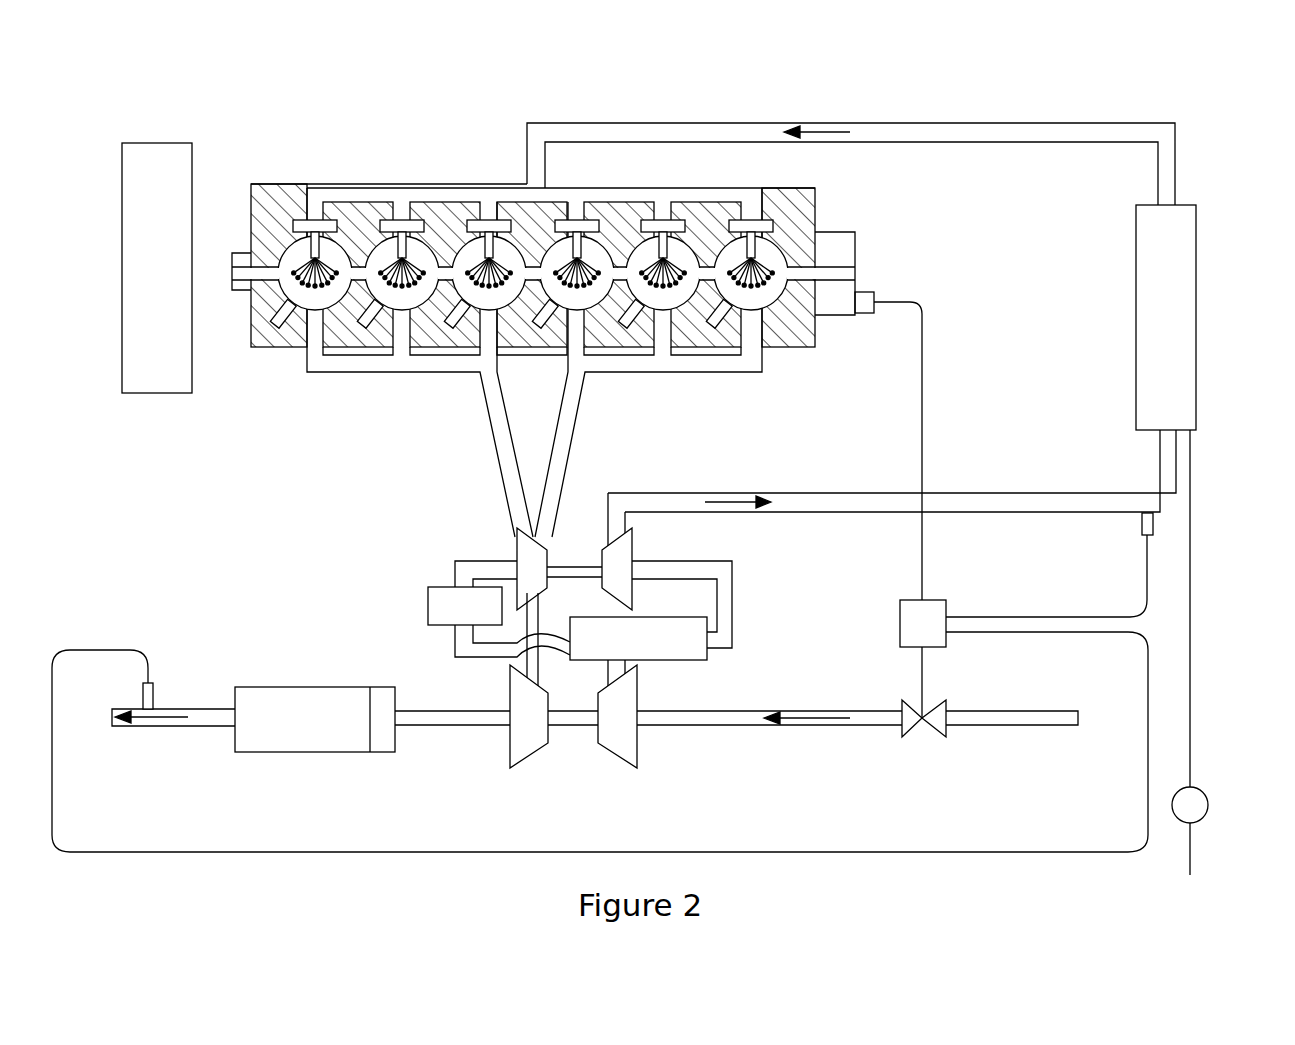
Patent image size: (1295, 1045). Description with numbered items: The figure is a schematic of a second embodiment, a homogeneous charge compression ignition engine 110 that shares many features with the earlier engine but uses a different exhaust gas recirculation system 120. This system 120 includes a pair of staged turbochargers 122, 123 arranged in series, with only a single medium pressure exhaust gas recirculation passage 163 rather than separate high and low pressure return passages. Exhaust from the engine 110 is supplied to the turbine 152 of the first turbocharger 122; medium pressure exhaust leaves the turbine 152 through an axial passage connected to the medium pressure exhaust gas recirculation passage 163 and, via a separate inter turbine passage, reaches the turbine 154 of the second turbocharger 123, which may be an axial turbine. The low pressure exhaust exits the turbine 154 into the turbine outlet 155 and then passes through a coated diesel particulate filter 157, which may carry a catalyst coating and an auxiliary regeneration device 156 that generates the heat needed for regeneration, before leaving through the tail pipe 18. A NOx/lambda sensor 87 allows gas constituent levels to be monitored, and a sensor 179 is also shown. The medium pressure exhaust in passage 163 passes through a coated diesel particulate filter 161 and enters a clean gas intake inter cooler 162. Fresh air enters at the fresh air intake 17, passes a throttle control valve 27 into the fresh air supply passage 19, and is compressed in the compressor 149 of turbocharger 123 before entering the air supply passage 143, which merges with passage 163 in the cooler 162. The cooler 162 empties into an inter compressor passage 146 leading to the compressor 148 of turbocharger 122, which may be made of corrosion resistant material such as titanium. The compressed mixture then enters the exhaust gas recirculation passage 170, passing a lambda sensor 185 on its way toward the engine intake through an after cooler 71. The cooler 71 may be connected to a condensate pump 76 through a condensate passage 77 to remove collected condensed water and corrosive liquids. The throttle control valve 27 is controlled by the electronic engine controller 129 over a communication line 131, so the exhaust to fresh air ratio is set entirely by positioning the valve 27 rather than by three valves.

The homogeneous charge compression ignition engine 110 is at (256, 141).
The exhaust gas recirculation system 120 is at (1209, 124).
The cooler 71 is at (1196, 252).
The exhaust sensor 179 is at (877, 293).
The turbocharger 122 is at (576, 530).
The exhaust gas recirculation passage 170 is at (968, 493).
The lambda sensor 185 is at (1142, 531).
The medium pressure exhaust gas recirculation passage 163 is at (455, 565).
The turbine 152 is at (515, 545).
The compressor 148 is at (633, 538).
The inter compressor passage 146 is at (734, 589).
The electronic engine controller 129 is at (900, 604).
The coated diesel particulate filter 161 is at (427, 602).
The condensate passage 77 is at (1192, 590).
The communication line 131 is at (923, 656).
The clean gas intake inter cooler 162 is at (710, 658).
The air supply passage 143 is at (605, 680).
The NOx/lambda sensor 87 is at (143, 692).
The coated diesel particulate filter 157 is at (270, 687).
The tail pipe 18 is at (112, 724).
The turbine outlet 155 is at (464, 727).
The auxiliary regeneration device 156 is at (380, 752).
The turbine 154 is at (510, 765).
The turbocharger 123 is at (575, 750).
The compressor 149 is at (637, 763).
The fresh air supply passage 19 is at (855, 729).
The throttle control valve 27 is at (947, 738).
The fresh air intake 17 is at (1078, 731).
The condensate pump 76 is at (1209, 803).